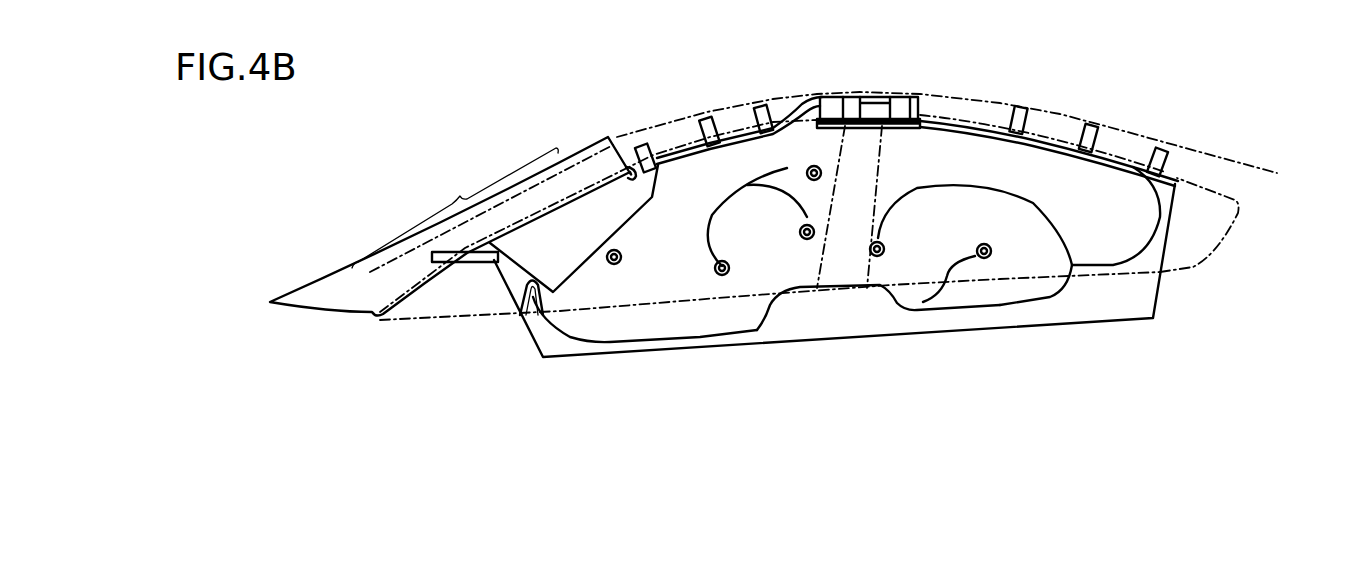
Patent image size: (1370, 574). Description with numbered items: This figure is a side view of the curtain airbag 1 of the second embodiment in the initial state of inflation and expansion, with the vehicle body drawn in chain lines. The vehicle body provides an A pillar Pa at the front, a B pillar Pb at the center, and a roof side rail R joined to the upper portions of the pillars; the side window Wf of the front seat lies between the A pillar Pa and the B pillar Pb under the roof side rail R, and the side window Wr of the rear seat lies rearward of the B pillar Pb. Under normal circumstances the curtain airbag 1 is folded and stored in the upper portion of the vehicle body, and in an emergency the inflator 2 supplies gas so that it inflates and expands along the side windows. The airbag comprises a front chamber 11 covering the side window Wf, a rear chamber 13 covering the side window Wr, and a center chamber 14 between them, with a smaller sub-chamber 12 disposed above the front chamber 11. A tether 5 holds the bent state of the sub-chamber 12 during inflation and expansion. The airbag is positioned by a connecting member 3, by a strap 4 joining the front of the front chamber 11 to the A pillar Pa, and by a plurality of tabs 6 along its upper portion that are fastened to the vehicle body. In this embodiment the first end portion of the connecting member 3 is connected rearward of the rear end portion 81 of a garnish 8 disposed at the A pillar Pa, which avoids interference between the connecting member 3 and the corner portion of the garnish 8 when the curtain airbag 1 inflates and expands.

The curtain airbag 1 is at (515, 348).
The inflator 2 is at (874, 98).
The connecting member 3 is at (644, 145).
The strap 4 is at (482, 264).
The tether 5 is at (522, 303).
The tabs 6 is at (708, 117).
The garnish 8 is at (581, 145).
The rear end portion 81 is at (630, 150).
The front chamber 11 is at (682, 312).
The sub-chamber 12 is at (573, 243).
The rear chamber 13 is at (1111, 234).
The center chamber 14 is at (851, 252).
The A pillar Pa is at (455, 208).
The B pillar Pb is at (882, 148).
The roof side rail R is at (958, 92).
The side window of the front seat Wf is at (461, 303).
The side window of the rear seat Wr is at (1214, 232).